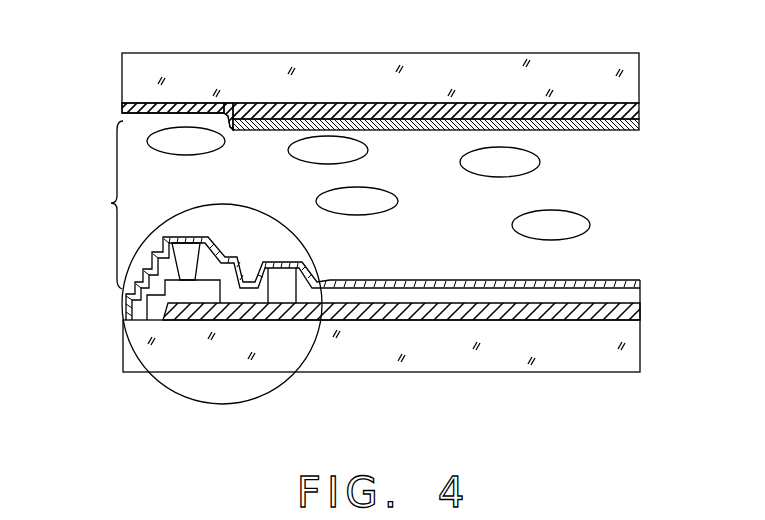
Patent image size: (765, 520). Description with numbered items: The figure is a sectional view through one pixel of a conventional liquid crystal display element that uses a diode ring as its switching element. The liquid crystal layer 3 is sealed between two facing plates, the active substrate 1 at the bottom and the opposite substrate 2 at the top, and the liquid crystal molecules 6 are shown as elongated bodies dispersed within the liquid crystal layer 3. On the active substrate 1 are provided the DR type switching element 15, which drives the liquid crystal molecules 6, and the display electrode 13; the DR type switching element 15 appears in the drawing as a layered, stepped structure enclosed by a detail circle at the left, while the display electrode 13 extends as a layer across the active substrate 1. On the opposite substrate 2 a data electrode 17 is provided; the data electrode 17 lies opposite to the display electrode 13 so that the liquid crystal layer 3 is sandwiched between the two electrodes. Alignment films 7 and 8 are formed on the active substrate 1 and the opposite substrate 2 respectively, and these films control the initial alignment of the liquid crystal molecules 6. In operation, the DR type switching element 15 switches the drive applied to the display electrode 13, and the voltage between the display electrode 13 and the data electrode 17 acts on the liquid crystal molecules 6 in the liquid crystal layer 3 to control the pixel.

The active substrate 1 is at (272, 360).
The opposite substrate 2 is at (305, 58).
The liquid crystal layer 3 is at (104, 205).
The liquid crystal molecules 6 is at (365, 198).
The alignment film 7 is at (127, 306).
The alignment film 8 is at (122, 108).
The display electrode 13 is at (470, 312).
The DR type switching element 15 is at (121, 292).
The data electrode 17 is at (496, 110).